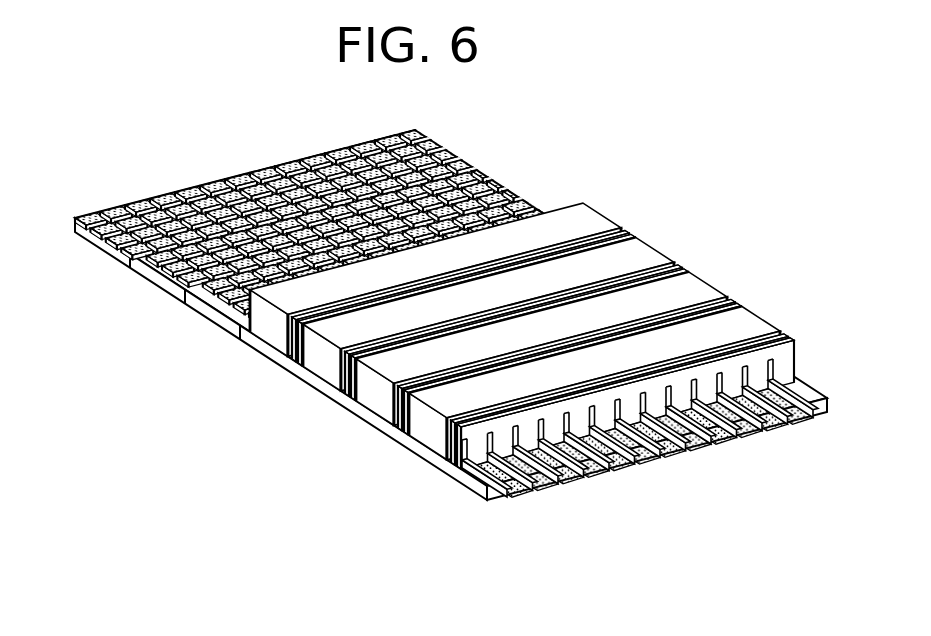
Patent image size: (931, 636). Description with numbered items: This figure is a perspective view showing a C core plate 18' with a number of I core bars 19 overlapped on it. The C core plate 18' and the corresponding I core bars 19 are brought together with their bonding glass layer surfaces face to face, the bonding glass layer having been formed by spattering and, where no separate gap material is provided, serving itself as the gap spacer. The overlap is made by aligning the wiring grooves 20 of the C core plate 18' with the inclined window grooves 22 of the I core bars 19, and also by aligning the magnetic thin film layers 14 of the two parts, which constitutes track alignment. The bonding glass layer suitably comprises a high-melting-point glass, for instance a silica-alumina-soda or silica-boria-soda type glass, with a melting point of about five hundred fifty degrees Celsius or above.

The magnetic thin film layer 14 is at (446, 432).
The C core plate 18' is at (451, 315).
The I core bar 19 is at (586, 211).
The wiring groove 20 is at (537, 480).
The inclined window groove 22 is at (485, 434).